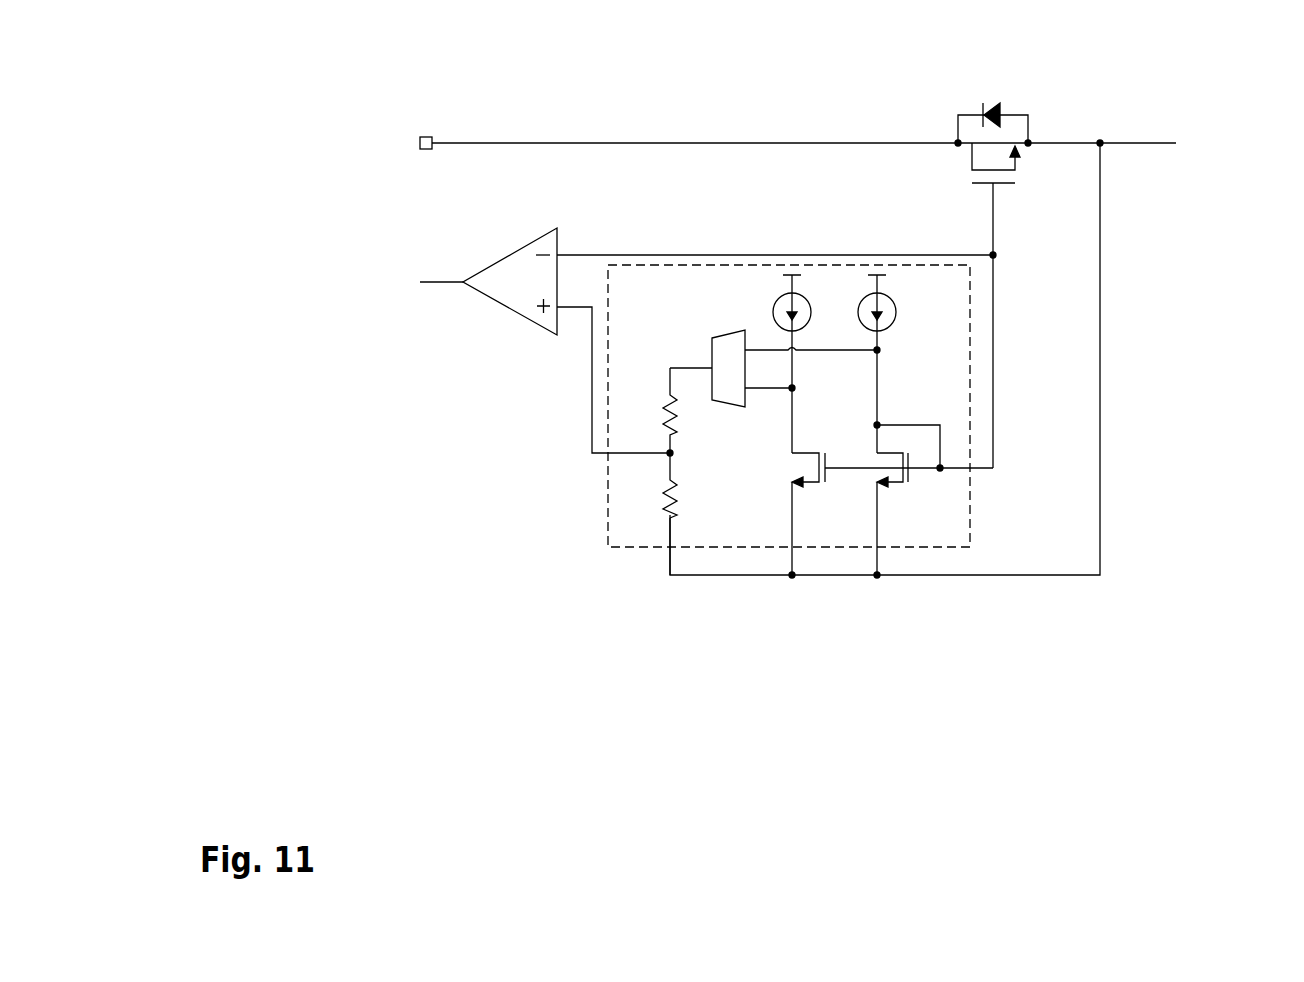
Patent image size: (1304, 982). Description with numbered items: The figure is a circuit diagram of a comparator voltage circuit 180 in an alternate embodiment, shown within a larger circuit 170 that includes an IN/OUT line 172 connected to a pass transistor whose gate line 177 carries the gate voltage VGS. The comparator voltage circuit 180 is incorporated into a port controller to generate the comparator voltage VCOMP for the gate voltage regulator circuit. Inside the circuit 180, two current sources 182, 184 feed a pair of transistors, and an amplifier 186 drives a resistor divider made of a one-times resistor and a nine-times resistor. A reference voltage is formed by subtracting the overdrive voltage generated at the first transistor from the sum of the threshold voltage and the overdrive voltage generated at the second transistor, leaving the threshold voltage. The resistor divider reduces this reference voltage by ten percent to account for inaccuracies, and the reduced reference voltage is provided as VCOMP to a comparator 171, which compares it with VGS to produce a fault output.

The surge protection circuit 170 is at (1234, 73).
The comparator 171 is at (503, 308).
The IN/OUT line 172 is at (853, 143).
The gate line of Q1 177 is at (994, 207).
The comparator voltage circuit 180 is at (608, 493).
The current source 182 is at (891, 300).
The current source 184 is at (805, 300).
The transconductance amplifier GM 186 is at (729, 337).